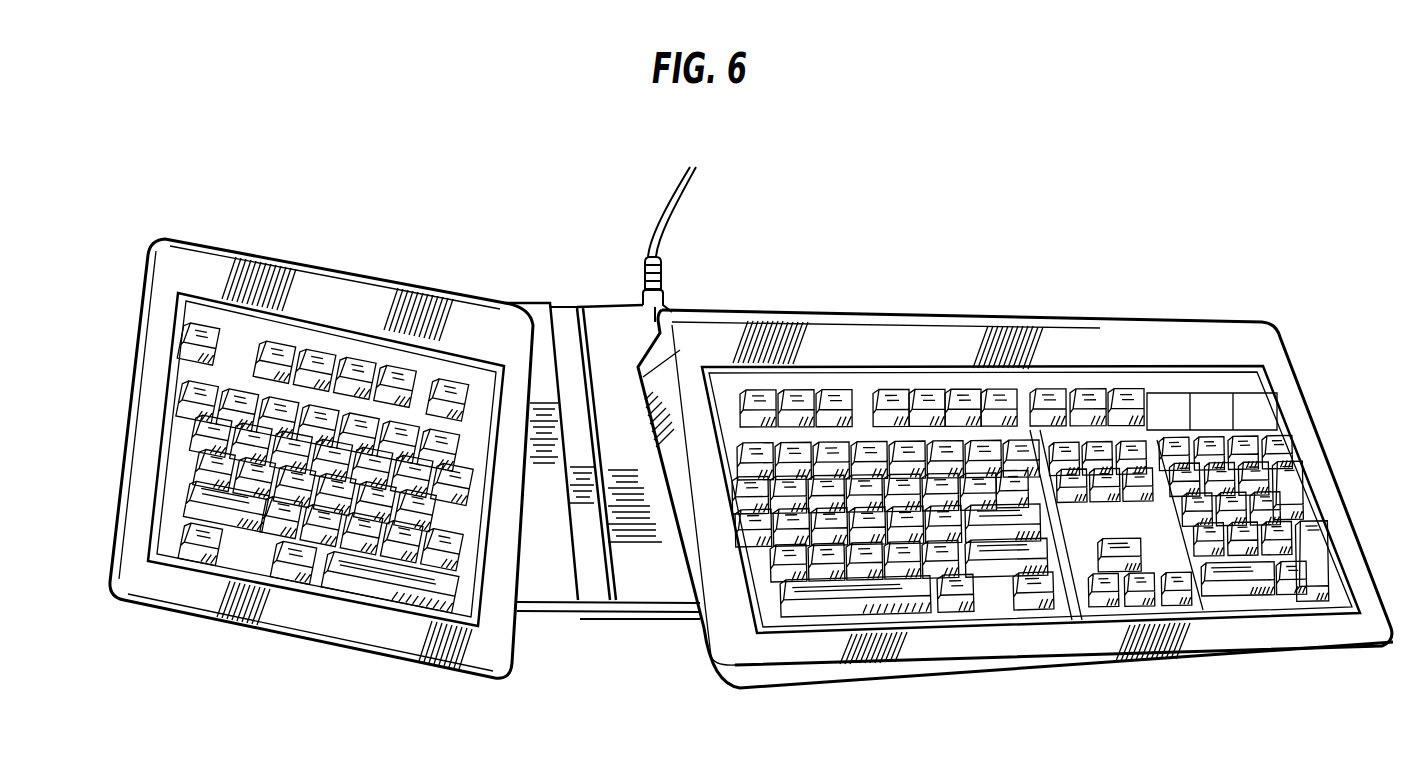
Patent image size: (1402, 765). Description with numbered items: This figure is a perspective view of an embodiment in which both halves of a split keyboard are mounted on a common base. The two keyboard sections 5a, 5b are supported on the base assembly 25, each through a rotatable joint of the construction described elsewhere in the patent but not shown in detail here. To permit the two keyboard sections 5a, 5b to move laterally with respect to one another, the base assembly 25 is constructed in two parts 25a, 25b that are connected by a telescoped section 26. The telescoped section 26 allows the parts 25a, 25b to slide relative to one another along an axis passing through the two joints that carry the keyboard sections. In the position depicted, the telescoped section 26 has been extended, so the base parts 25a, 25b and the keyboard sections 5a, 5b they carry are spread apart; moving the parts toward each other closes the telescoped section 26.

The keyboard section 5a is at (138, 373).
The keyboard section 5b is at (1305, 403).
The base assembly 25 is at (563, 622).
The base part 25a is at (510, 302).
The base part 25b is at (1100, 317).
The telescoped section 26 is at (562, 280).